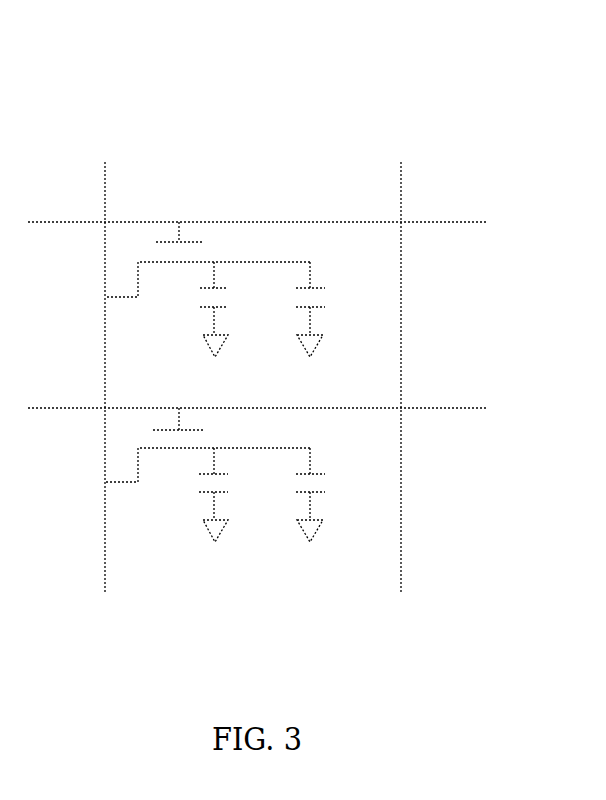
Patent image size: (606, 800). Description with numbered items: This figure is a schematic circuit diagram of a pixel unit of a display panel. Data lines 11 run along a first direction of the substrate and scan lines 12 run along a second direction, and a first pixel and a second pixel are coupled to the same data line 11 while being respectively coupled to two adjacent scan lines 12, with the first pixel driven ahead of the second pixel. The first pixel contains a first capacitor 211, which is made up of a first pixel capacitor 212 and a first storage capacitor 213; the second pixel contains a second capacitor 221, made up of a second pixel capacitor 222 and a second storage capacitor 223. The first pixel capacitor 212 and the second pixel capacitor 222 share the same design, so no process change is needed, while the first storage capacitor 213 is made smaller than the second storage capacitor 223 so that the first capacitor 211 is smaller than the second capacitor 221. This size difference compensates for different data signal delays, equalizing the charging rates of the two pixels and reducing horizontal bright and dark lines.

The data line 11 is at (146, 300).
The scan line 12 is at (258, 130).
The first capacitor 211 is at (145, 470).
The first pixel capacitor 212 is at (263, 183).
The first storage capacitor 213 is at (359, 213).
The second capacitor 221 is at (250, 590).
The second pixel capacitor 222 is at (267, 329).
The second storage capacitor 223 is at (365, 298).